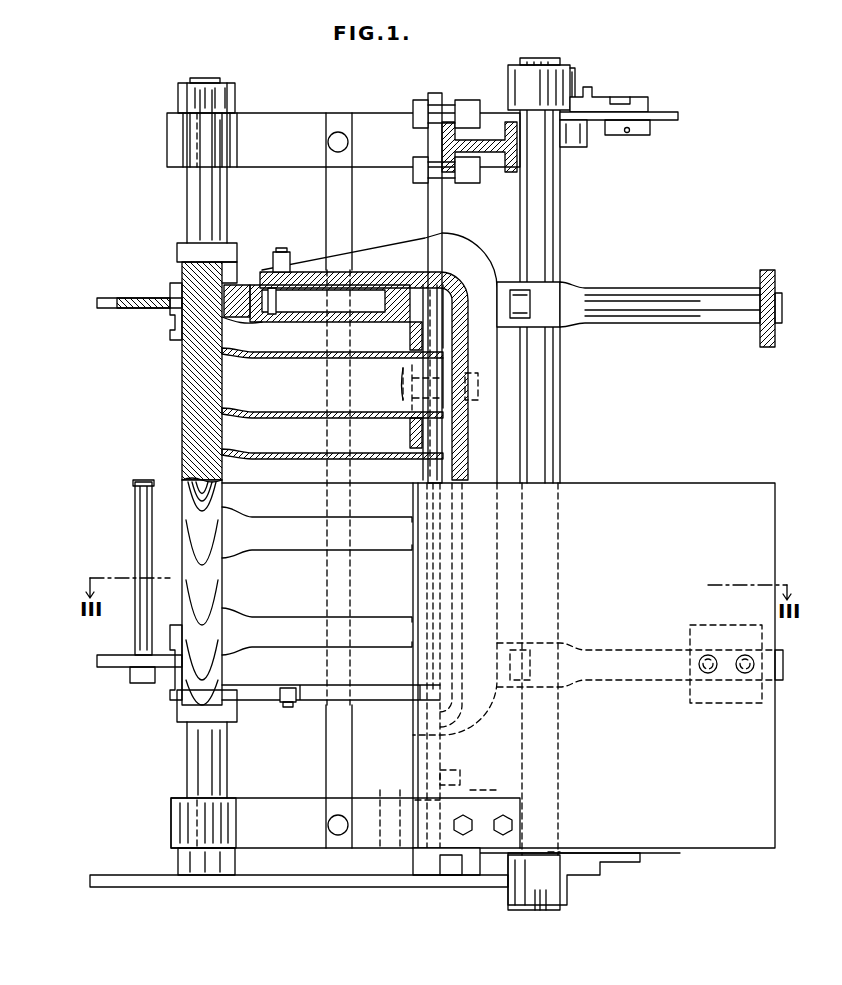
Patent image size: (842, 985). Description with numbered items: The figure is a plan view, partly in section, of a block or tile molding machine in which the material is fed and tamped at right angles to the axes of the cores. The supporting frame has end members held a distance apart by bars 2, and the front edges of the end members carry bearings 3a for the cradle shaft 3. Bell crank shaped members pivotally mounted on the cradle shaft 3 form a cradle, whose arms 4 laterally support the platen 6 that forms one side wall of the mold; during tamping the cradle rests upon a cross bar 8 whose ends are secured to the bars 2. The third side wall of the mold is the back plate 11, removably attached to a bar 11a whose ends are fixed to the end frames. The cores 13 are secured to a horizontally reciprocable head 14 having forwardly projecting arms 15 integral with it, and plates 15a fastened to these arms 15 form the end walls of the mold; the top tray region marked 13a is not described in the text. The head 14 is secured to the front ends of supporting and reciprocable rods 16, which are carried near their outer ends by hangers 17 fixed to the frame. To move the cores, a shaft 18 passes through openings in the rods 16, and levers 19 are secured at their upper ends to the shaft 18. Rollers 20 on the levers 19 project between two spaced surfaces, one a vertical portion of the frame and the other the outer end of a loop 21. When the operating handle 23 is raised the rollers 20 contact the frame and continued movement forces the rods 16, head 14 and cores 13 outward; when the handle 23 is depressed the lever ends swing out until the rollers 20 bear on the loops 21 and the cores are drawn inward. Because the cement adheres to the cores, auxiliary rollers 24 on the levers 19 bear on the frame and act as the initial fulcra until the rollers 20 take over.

The bars 2 is at (298, 113).
The cradle shaft 3 is at (187, 752).
The bearings 3a is at (171, 823).
The arms 4 is at (170, 310).
The platen 6 is at (182, 410).
The cross bar 8 is at (326, 203).
The back plate 11 is at (410, 340).
The bar 11a is at (435, 213).
The cores 13 is at (332, 524).
The top tray 13a is at (300, 322).
The head 14 is at (466, 432).
The arms 15 is at (405, 270).
The plates 15a is at (352, 270).
The rods 16 is at (667, 297).
The hangers 17 is at (770, 258).
The shaft 18 is at (545, 233).
The levers 19 is at (608, 97).
The rollers 20 is at (650, 128).
The loop 21 is at (680, 113).
The operating handle 23 is at (366, 890).
The rollers 24 is at (586, 147).